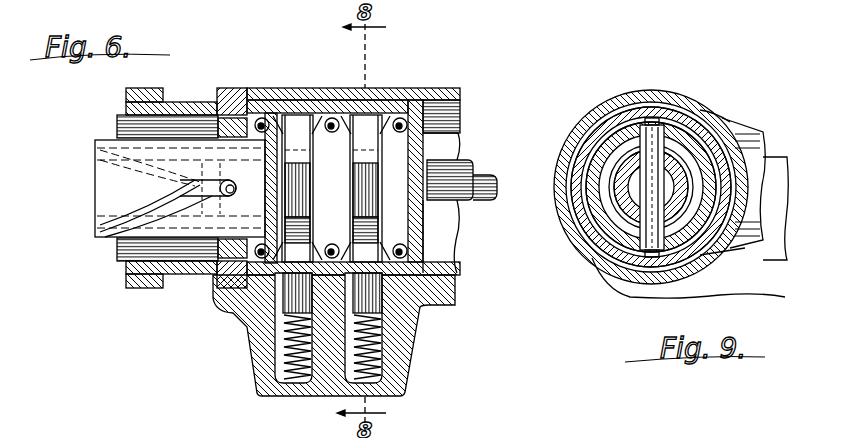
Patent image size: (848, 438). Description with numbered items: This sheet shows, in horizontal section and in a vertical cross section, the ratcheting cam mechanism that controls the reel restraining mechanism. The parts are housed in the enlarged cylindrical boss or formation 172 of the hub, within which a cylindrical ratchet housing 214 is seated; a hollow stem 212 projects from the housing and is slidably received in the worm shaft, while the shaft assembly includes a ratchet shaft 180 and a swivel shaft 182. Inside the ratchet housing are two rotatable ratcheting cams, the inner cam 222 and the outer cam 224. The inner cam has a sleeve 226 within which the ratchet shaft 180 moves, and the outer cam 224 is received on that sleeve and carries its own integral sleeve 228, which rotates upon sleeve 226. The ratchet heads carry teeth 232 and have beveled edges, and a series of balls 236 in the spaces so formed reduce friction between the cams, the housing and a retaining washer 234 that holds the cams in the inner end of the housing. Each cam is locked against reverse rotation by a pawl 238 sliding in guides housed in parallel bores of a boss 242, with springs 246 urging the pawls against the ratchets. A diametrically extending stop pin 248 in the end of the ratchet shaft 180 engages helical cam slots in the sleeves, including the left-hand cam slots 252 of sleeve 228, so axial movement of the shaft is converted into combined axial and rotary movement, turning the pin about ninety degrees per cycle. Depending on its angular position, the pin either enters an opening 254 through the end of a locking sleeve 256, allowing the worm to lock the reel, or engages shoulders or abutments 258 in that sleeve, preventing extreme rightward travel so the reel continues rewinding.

In FIG. 6, the cylindrical boss or formation 172 is at (460, 95).
In FIG. 9, the ratchet shaft 180 is at (678, 288).
In FIG. 6, the swivel shaft 182 is at (480, 197).
In FIG. 6, the hollow stem 212 is at (457, 180).
In FIG. 6, the ratchet housing 214 is at (440, 100).
In FIG. 9, the ratchet housing 214 is at (583, 145).
In FIG. 6, the inner ratcheting cam 222 is at (367, 157).
In FIG. 6, the outer ratcheting cam 224 is at (300, 135).
In FIG. 9, the sleeve 226 is at (615, 282).
In FIG. 6, the sleeve 228 is at (105, 186).
In FIG. 9, the sleeve 228 is at (582, 250).
In FIG. 6, the teeth 232 is at (298, 162).
In FIG. 6, the retaining washer 234 is at (246, 88).
In FIG. 6, the balls 236 is at (270, 118).
In FIG. 6, the pawl 238 is at (292, 282).
In FIG. 9, the boss 242 is at (768, 143).
In FIG. 6, the springs 246 is at (308, 357).
In FIG. 6, the stop pin 248 is at (192, 196).
In FIG. 9, the stop pin 248 is at (666, 118).
In FIG. 6, the cam slots 252 is at (190, 178).
In FIG. 9, the opening 254 is at (630, 128).
In FIG. 6, the locking sleeve 256 is at (125, 118).
In FIG. 9, the locking sleeve 256 is at (712, 153).
In FIG. 6, the shoulders or abutments 258 is at (203, 127).
In FIG. 9, the shoulders or abutments 258 is at (718, 165).